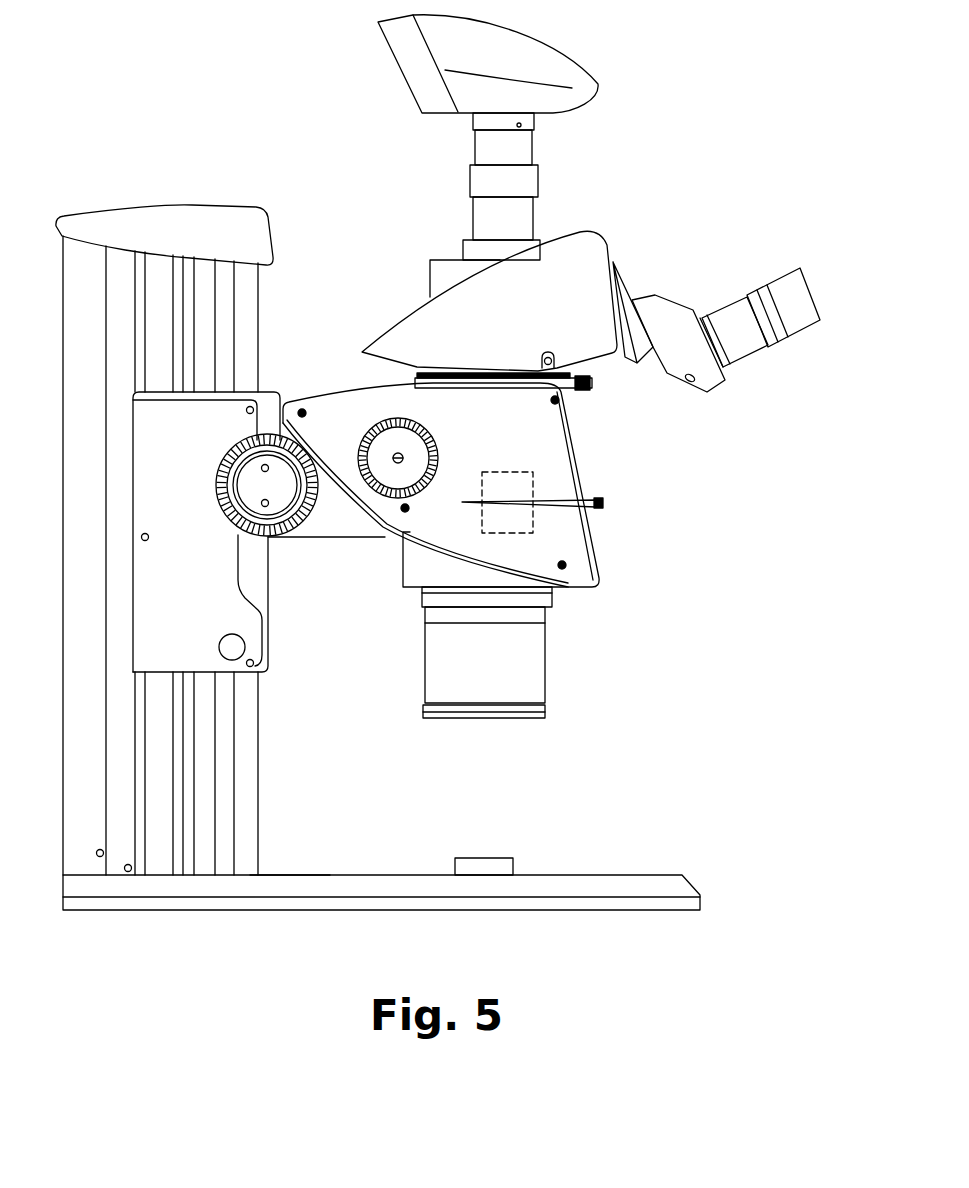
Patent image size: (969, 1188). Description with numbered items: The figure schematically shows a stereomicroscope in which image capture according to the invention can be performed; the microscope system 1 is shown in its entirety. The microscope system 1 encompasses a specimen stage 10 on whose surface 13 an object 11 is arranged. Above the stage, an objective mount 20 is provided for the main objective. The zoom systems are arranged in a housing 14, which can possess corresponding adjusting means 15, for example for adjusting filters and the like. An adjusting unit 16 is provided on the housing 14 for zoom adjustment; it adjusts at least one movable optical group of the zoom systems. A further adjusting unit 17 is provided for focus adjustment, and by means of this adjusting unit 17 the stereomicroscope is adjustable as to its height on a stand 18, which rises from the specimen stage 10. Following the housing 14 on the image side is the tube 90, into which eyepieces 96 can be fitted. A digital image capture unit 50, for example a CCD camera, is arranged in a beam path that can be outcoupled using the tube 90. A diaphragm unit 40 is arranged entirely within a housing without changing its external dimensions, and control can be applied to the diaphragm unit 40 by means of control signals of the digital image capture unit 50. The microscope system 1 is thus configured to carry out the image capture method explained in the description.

The microscope system 1 is at (687, 763).
The specimen stage 10 is at (233, 888).
The object 11 is at (505, 865).
The surface 13 is at (285, 875).
The housing 14 is at (593, 530).
The adjusting means 15 is at (602, 502).
The adjusting unit 16 is at (422, 450).
The adjusting unit 17 is at (223, 512).
The stand 18 is at (248, 727).
The objective mount 20 is at (542, 675).
The diaphragm unit 40 is at (533, 472).
The digital image capture unit 50 is at (590, 82).
The tube 90 is at (605, 248).
The eyepieces 96 is at (743, 347).